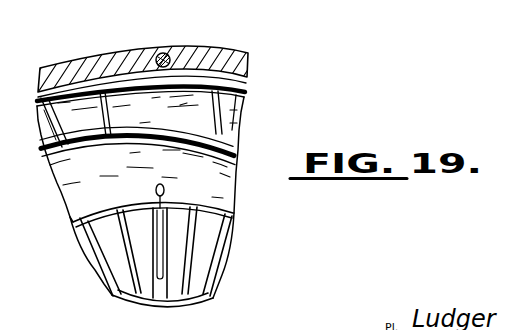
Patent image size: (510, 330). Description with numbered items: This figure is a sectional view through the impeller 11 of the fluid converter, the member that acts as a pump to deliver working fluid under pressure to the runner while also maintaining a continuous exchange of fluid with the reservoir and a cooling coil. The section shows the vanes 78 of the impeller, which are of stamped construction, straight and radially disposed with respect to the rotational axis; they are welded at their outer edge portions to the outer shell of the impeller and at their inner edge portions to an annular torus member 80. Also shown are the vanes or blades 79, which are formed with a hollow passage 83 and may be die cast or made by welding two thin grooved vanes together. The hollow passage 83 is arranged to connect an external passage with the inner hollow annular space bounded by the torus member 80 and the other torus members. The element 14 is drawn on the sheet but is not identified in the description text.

The impeller 11 is at (210, 51).
The screw 14 is at (166, 52).
The vanes 78 is at (62, 143).
The vanes or blades 79 is at (176, 192).
The torus member 80 is at (241, 147).
The hollow passage 83 is at (159, 184).